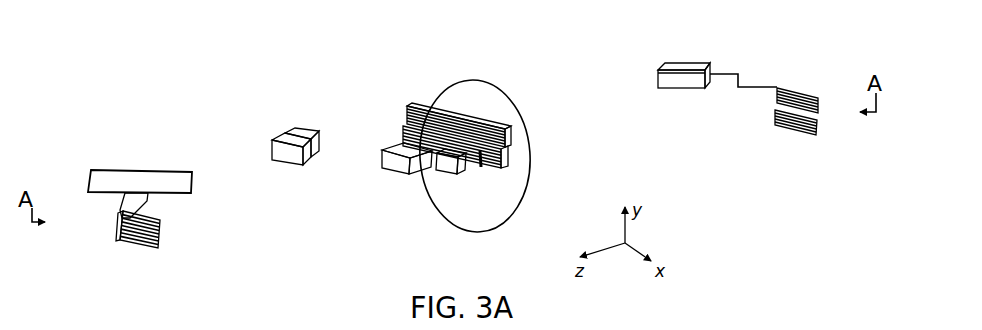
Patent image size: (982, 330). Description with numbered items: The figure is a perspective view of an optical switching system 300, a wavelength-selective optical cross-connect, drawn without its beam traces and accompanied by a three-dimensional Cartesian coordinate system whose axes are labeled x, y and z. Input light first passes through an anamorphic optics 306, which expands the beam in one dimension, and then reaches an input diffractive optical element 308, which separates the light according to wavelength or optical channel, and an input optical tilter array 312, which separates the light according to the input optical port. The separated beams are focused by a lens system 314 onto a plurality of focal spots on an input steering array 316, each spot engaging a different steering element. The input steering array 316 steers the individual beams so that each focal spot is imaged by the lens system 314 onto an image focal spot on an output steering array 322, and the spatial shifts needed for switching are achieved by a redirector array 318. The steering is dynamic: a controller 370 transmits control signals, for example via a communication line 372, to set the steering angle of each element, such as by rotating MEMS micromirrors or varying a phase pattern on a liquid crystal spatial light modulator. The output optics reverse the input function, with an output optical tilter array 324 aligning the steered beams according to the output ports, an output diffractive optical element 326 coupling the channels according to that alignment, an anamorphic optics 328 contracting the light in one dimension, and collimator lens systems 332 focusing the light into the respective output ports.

The optical switching system 300 is at (134, 111).
The anamorphic optics 306 is at (284, 139).
The input diffractive optical element 308 is at (123, 181).
The input optical tilter array 312 is at (407, 107).
The lens system 314 is at (475, 155).
The input steering array 316 is at (813, 103).
The redirector array 318 is at (122, 229).
The output steering array 322 is at (812, 123).
The output optical tilter array 324 is at (442, 145).
The output diffractive optical element 326 is at (122, 204).
The anamorphic optics 328 is at (424, 171).
The collimator lens systems 332 is at (481, 168).
The controller 370 is at (678, 63).
The communication line 372 is at (735, 70).